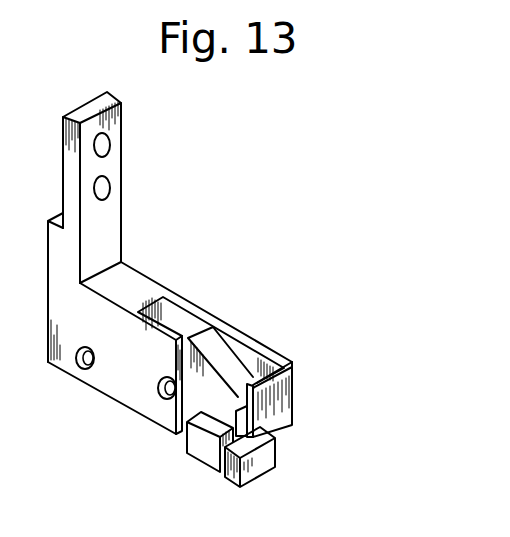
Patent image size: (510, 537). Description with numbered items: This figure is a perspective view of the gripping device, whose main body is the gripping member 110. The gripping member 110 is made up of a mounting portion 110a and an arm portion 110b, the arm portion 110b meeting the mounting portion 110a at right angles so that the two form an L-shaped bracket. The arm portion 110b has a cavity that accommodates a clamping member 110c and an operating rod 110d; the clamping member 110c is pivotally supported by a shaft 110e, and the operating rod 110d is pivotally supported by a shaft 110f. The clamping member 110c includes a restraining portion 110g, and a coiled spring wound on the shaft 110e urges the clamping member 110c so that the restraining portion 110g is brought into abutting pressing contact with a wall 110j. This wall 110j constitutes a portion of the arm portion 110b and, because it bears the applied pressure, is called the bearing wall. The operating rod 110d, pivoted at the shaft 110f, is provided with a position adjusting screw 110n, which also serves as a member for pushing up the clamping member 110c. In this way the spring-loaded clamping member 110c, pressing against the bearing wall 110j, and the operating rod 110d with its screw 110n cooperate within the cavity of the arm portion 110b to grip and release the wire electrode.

The gripping member 110 is at (131, 154).
The mounting portion 110a is at (112, 203).
The arm portion 110b is at (138, 287).
The clamping member 110c is at (217, 359).
The bearing wall 110j is at (292, 370).
The restraining portion 110g is at (240, 419).
The operating rod 110d is at (267, 455).
The position adjusting screw 110n is at (198, 453).
The shaft 110e is at (161, 395).
The shaft 110f is at (80, 366).